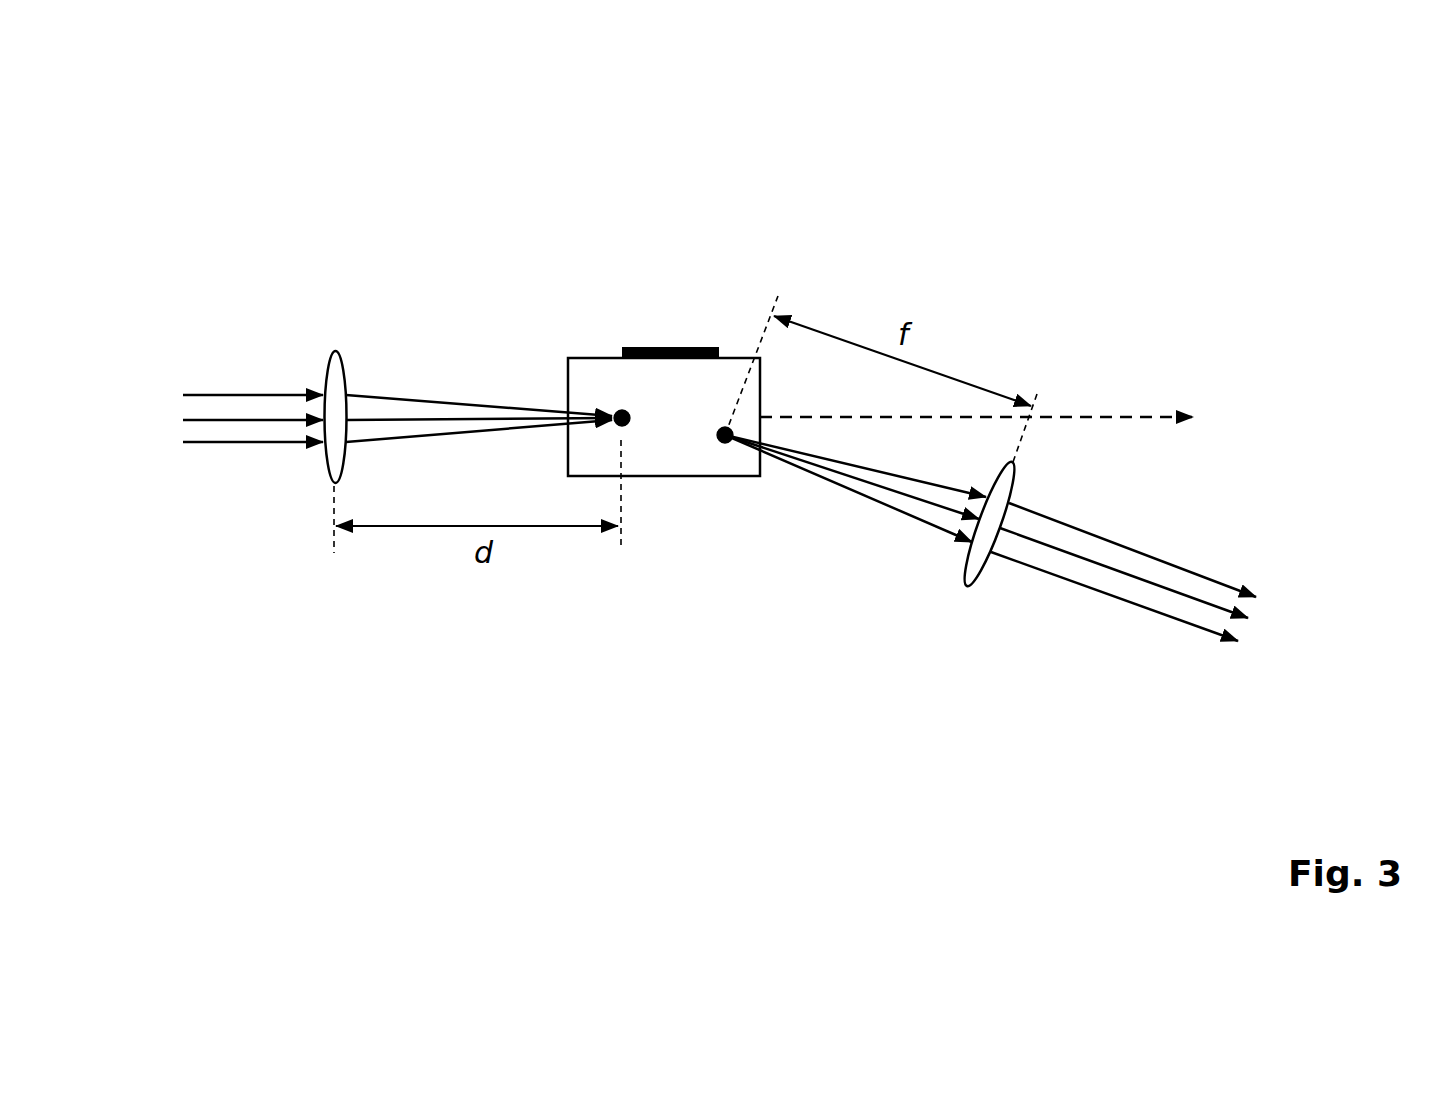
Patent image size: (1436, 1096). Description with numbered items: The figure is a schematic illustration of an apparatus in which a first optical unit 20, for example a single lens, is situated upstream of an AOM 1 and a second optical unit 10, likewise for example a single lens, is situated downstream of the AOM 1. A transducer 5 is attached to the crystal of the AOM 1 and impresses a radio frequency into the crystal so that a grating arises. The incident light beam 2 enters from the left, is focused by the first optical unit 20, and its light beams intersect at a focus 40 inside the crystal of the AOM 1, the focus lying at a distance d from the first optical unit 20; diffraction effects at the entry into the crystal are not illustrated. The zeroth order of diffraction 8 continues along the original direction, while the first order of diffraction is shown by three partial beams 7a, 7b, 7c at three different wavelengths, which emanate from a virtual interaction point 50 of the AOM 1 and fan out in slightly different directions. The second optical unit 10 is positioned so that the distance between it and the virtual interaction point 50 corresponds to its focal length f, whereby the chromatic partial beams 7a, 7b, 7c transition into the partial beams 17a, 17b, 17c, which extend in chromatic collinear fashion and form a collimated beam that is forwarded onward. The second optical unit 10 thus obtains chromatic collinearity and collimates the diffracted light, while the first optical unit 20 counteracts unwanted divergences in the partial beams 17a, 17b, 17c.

The AOM 1 is at (643, 462).
The incident light beam 2 is at (400, 442).
The transducer 5 is at (702, 347).
The zeroth order of diffraction 8 is at (942, 417).
The second optical unit 10 is at (973, 587).
The first optical unit 20 is at (330, 480).
The focus 40 is at (621, 396).
The virtual interaction point 50 is at (729, 404).
The partial beam 7a is at (948, 490).
The partial beam 7b is at (863, 480).
The partial beam 7c is at (802, 472).
The partial beam 17a is at (1212, 583).
The partial beam 17b is at (1163, 587).
The partial beam 17c is at (1092, 588).